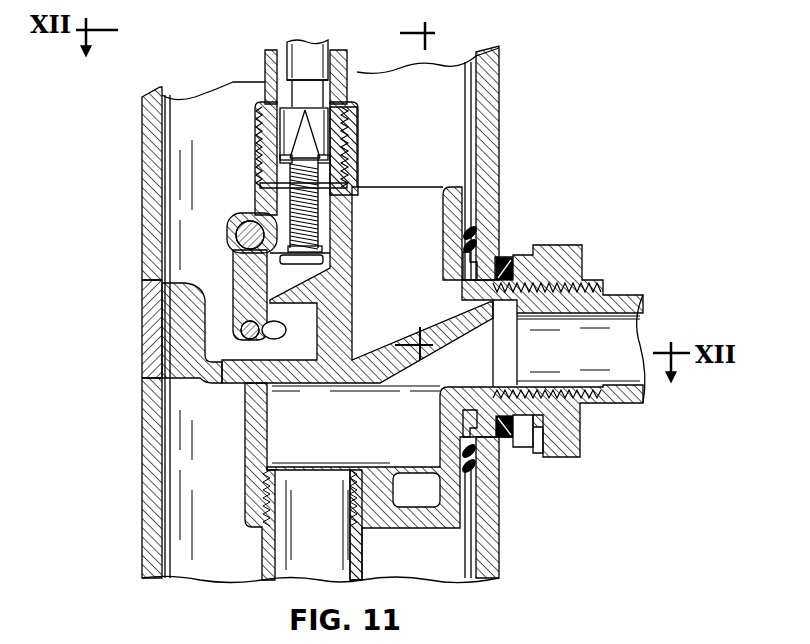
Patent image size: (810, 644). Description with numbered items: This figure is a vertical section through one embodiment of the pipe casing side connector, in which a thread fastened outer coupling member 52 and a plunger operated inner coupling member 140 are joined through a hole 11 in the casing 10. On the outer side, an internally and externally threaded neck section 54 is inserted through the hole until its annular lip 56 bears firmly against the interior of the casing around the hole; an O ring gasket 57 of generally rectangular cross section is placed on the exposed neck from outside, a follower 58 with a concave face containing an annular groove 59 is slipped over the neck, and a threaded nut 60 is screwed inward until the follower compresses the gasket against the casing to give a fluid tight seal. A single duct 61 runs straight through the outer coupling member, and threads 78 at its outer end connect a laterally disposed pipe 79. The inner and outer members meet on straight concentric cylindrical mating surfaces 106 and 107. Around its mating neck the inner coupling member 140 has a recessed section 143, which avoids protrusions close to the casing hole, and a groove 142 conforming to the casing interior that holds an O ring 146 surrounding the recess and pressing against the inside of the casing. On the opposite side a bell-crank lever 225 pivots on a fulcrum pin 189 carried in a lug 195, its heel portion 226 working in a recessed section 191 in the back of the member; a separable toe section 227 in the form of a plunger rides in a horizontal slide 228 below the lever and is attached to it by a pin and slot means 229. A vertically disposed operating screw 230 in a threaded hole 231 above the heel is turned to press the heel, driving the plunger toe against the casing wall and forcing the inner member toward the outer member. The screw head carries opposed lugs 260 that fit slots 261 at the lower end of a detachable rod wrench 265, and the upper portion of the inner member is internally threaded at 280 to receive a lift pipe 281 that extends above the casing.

The casing 10 is at (150, 192).
The hole 11 is at (440, 407).
The outer coupling member 52 is at (590, 248).
The neck section 54 is at (604, 421).
The annular lip 56 is at (499, 270).
The O ring gasket 57 is at (535, 252).
The follower 58 is at (540, 458).
The annular groove 59 is at (503, 425).
The threaded nut 60 is at (573, 453).
The duct 61 is at (507, 343).
The threads 78 is at (594, 385).
The pipe 79 is at (623, 296).
The cylindrical mating surface 106 is at (473, 290).
The cylindrical mating surface 107 is at (493, 305).
The inner coupling member 140 is at (241, 476).
The groove 142 is at (462, 236).
The recessed section 143 is at (463, 277).
The O ring 146 is at (477, 253).
The fulcrum pin 189 is at (250, 226).
The recessed section 191 is at (353, 275).
The lug 195 is at (227, 230).
The bell-crank lever 225 is at (231, 258).
The heel portion 226 is at (312, 256).
The toe section 227 is at (173, 380).
The horizontal slide 228 is at (278, 384).
The pin and slot means 229 is at (263, 342).
The operating screw 230 is at (323, 209).
The threaded hole 231 is at (320, 232).
The lugs 260 is at (348, 102).
The slots 261 is at (325, 162).
The rod wrench 265 is at (311, 36).
The internal threads 280 is at (262, 136).
The lift pipe 281 is at (266, 62).